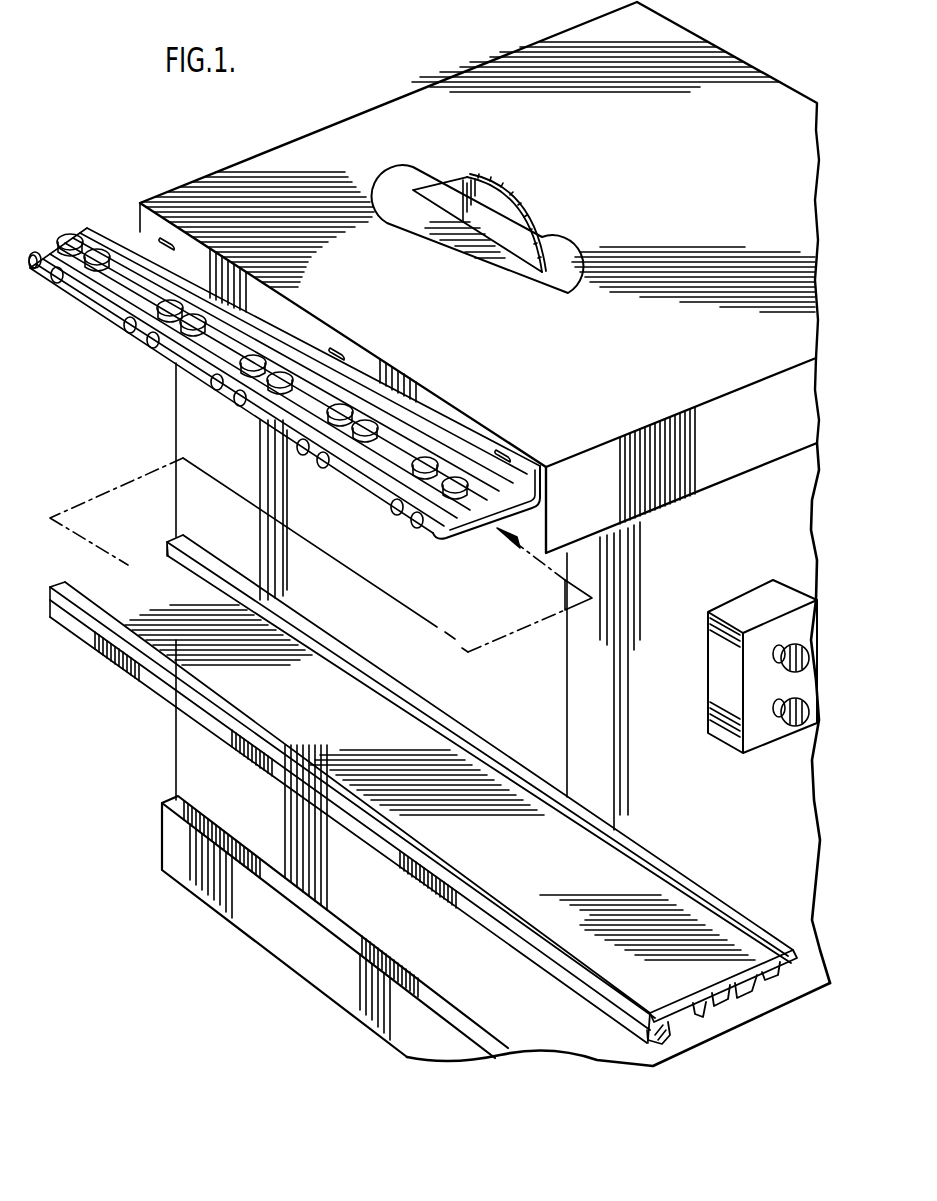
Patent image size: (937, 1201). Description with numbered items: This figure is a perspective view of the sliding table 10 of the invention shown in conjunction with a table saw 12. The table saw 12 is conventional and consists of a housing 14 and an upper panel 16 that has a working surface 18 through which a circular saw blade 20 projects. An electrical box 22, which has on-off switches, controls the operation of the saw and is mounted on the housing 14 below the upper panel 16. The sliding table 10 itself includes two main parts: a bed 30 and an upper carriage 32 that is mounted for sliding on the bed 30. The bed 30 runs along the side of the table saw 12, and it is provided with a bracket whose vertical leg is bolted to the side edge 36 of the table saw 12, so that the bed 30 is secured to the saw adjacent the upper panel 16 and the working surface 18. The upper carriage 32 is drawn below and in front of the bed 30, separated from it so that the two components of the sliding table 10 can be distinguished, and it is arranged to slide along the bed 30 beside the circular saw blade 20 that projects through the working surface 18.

The sliding table 10 is at (97, 337).
The table saw 12 is at (436, 62).
The housing 14 is at (783, 530).
The upper panel 16 is at (753, 440).
The working surface 18 is at (669, 353).
The circular saw blade 20 is at (484, 178).
The electrical box 22 is at (720, 683).
The bed 30 is at (83, 211).
The upper carriage 32 is at (68, 564).
The side edge 36 is at (543, 515).